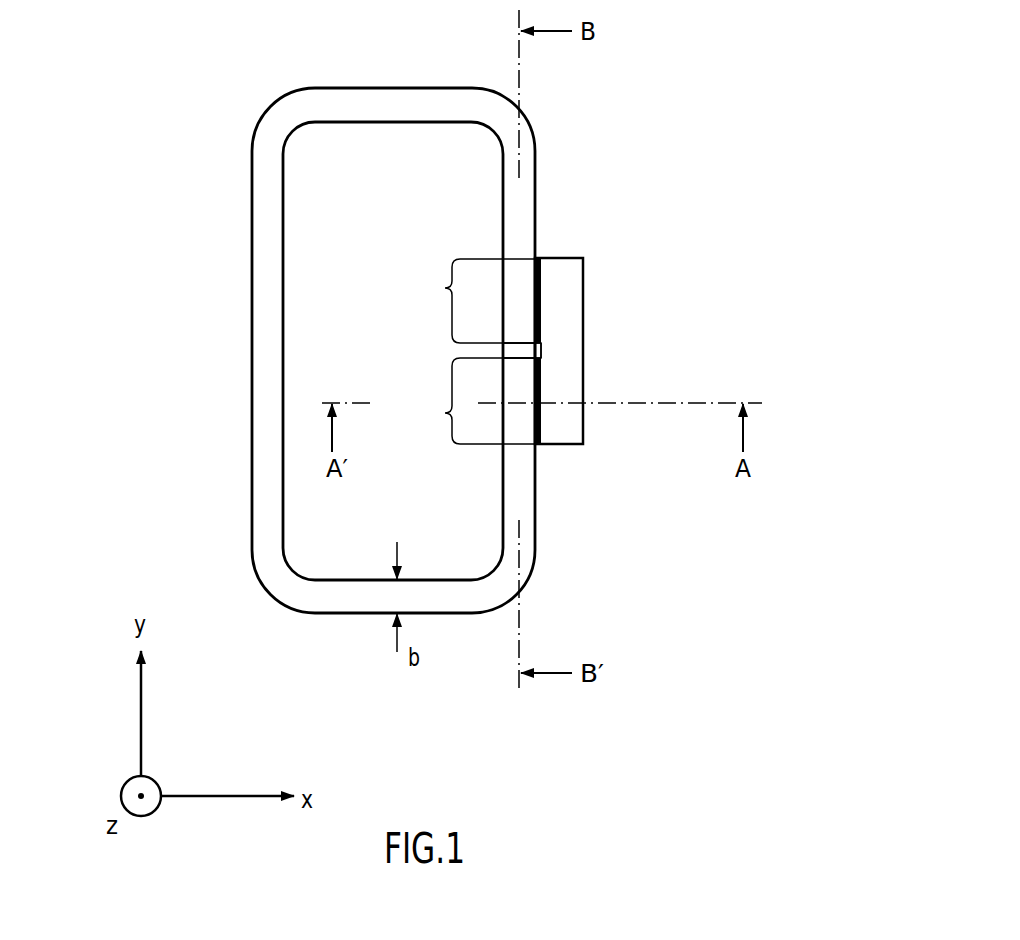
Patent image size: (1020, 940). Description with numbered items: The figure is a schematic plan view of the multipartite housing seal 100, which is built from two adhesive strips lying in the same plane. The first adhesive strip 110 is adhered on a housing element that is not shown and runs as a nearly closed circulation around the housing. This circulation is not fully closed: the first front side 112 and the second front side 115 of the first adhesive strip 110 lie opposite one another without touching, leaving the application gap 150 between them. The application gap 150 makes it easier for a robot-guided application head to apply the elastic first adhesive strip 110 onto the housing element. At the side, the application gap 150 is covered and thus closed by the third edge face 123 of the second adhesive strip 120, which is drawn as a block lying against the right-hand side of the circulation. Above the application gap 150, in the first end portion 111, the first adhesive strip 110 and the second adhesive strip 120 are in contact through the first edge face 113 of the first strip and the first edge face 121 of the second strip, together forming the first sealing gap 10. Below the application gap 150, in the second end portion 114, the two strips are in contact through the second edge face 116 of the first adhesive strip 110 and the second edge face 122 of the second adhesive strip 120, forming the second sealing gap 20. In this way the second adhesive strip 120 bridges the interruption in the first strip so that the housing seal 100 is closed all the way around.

The housing seal 100 is at (252, 106).
The first adhesive strip 110 is at (252, 242).
The first end portion 111 is at (469, 301).
The first front side 112 is at (472, 332).
The second end portion 114 is at (469, 401).
The second front side 115 is at (518, 346).
The application gap 150 is at (584, 362).
The second adhesive strip 120 is at (586, 284).
The third edge face 123 is at (541, 347).
The first sealing gap 10 is at (538, 257).
The first edge face 113 is at (618, 214).
The first edge face 121 is at (635, 214).
The second sealing gap 20 is at (539, 446).
The second edge face 116 is at (605, 465).
The second edge face 122 is at (621, 465).